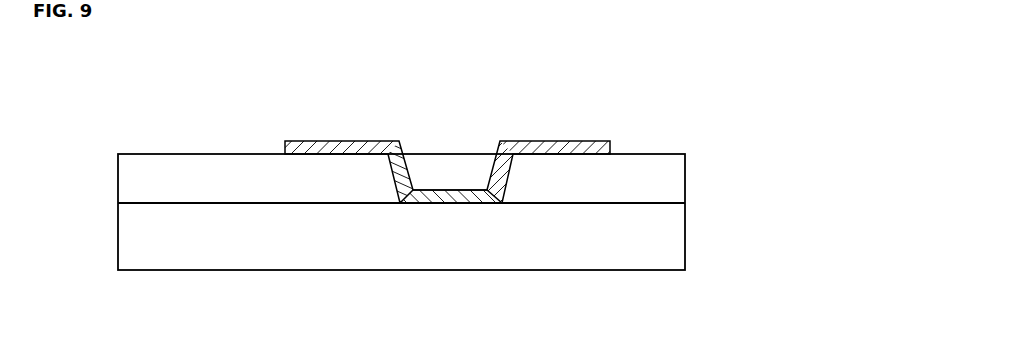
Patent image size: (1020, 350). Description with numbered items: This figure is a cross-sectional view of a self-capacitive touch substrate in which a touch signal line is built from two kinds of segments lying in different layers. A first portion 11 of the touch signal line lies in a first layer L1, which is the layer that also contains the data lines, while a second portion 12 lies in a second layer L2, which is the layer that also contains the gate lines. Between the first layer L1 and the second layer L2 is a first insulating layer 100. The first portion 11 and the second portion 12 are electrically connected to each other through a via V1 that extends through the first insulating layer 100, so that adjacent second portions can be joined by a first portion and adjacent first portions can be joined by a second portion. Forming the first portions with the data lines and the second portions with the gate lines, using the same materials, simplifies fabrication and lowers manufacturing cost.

The first portion 11 is at (560, 152).
The second portion 12 is at (482, 198).
The first insulating layer 100 is at (685, 178).
The via V1 is at (446, 153).
The first layer L1 is at (612, 149).
The second layer L2 is at (503, 197).